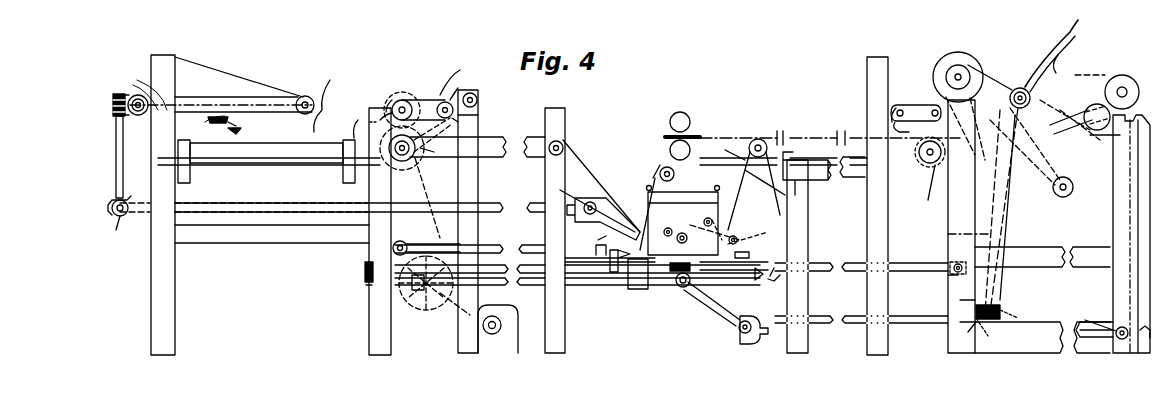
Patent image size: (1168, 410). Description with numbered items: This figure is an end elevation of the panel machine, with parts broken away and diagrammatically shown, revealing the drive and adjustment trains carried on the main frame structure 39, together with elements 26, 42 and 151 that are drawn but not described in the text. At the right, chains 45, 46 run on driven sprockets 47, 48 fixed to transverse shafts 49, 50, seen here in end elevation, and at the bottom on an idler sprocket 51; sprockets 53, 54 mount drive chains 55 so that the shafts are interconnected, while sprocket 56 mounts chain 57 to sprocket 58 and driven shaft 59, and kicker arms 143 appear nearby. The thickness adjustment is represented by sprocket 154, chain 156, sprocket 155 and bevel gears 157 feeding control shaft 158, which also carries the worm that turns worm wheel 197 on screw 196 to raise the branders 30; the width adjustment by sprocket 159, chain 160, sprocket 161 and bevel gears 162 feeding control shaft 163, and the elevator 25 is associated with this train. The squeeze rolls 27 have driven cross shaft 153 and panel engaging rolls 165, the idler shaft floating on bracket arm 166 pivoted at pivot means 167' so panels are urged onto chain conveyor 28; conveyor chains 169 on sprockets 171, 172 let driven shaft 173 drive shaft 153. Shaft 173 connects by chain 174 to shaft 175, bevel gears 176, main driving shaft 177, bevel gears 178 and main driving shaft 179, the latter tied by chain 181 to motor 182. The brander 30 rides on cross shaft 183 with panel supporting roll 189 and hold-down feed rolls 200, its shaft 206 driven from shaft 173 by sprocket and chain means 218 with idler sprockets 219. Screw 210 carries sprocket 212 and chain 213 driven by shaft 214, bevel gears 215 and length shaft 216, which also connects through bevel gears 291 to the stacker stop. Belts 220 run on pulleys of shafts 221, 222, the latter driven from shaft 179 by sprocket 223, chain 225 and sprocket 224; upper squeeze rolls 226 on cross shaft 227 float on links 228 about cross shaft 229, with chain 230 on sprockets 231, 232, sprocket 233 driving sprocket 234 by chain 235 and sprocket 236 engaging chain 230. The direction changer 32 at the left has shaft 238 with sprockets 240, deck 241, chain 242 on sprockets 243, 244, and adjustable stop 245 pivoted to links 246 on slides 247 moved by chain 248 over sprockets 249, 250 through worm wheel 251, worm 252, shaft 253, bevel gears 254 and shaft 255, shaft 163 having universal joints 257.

The elevator 25 is at (1054, 370).
The drive arrow 26 is at (1074, 99).
The squeeze rolls 27 is at (918, 170).
The chain conveyor 28 is at (822, 119).
The branders 30 is at (701, 106).
The direction changer 32 is at (333, 107).
The main frame structure 39 is at (190, 105).
The bar 42 is at (1076, 323).
The chain 45 is at (1116, 136).
The chain 46 is at (940, 68).
The driven sprocket 47 is at (1135, 88).
The driven sprocket 48 is at (985, 62).
The transverse shaft 49 is at (1101, 95).
The transverse shaft 50 is at (993, 70).
The idler sprocket 51 is at (1114, 322).
The sprocket 53 is at (1121, 76).
The sprocket 54 is at (960, 50).
The drive chains 55 is at (1064, 55).
The sprocket 56 is at (938, 52).
The chain 57 is at (1033, 200).
The sprocket 58 is at (1067, 211).
The driven shaft 59 is at (1072, 183).
The kicker arms 143 is at (1025, 146).
The belt 151 is at (1070, 127).
The cross shaft 153 is at (931, 191).
The sprocket 154 is at (1064, 57).
The sprocket 155 is at (941, 293).
The chain 156 is at (950, 236).
The bevel gears 157 is at (959, 276).
The control shaft 158 is at (715, 276).
The sprocket 159 is at (1062, 46).
The chain 160 is at (1015, 224).
The sprocket 161 is at (1000, 312).
The bevel gears 162 is at (995, 307).
The control shaft 163 is at (262, 205).
The panel engaging rolls 165 is at (906, 127).
The bracket arm 166 is at (912, 105).
The pivot means 167' is at (908, 94).
The conveyor chains 169 is at (836, 150).
The sprocket 171 is at (921, 152).
The sprocket 172 is at (755, 138).
The driven shaft 173 is at (750, 140).
The chain 174 is at (800, 190).
The shaft 175 is at (770, 288).
The bevel gears 176 is at (785, 287).
The main driving shaft 177 is at (651, 282).
The bevel gears 178 is at (418, 298).
The main driving shaft 179 is at (380, 302).
The chain 181 is at (450, 312).
The motor 182 is at (508, 318).
The cross shaft 183 is at (698, 138).
The panel supporting roll 189 is at (666, 145).
The screw 196 is at (692, 290).
The worm wheel 197 is at (682, 288).
The panel hold-down feed rolls 200 is at (683, 105).
The shaft 206 is at (708, 221).
The screw 210 is at (662, 164).
The sprocket 212 is at (676, 173).
The chain 213 is at (673, 187).
The shaft 214 is at (617, 272).
The bevel gears 215 is at (609, 238).
The shaft 216 is at (539, 244).
The sprocket and chain means 218 is at (704, 247).
The idler sprockets 219 is at (762, 255).
The belts 220 is at (535, 135).
The shaft 221 is at (566, 138).
The shaft 222 is at (437, 153).
The sprocket 223 is at (413, 290).
The sprocket 224 is at (406, 163).
The chain 225 is at (428, 173).
The upper squeeze rolls 226 is at (402, 92).
The cross shaft 227 is at (388, 101).
The links 228 is at (458, 65).
The cross shaft 229 is at (466, 120).
The chain 230 is at (432, 148).
The sprocket 231 is at (381, 122).
The sprocket 232 is at (480, 93).
The sprocket 233 is at (461, 76).
The sprocket 234 is at (377, 88).
The chain 235 is at (403, 98).
The sprocket 236 is at (448, 102).
The shaft 238 is at (325, 164).
The sprockets 240 is at (345, 183).
The deck 241 is at (333, 97).
The chain 242 is at (366, 262).
The sprocket 243 is at (356, 122).
The sprocket 244 is at (364, 283).
The adjustable stop 245 is at (248, 128).
The link 246 is at (232, 125).
The slides 247 is at (214, 124).
The chain 248 is at (148, 58).
The sprockets 249 is at (304, 96).
The sprockets 250 is at (138, 116).
The worm wheel 251 is at (130, 90).
The worm 252 is at (113, 101).
The shaft 253 is at (116, 148).
The bevel gears 254 is at (112, 212).
The shaft 255 is at (128, 228).
The universal joints 257 is at (600, 202).
The bevel gears 291 is at (408, 240).